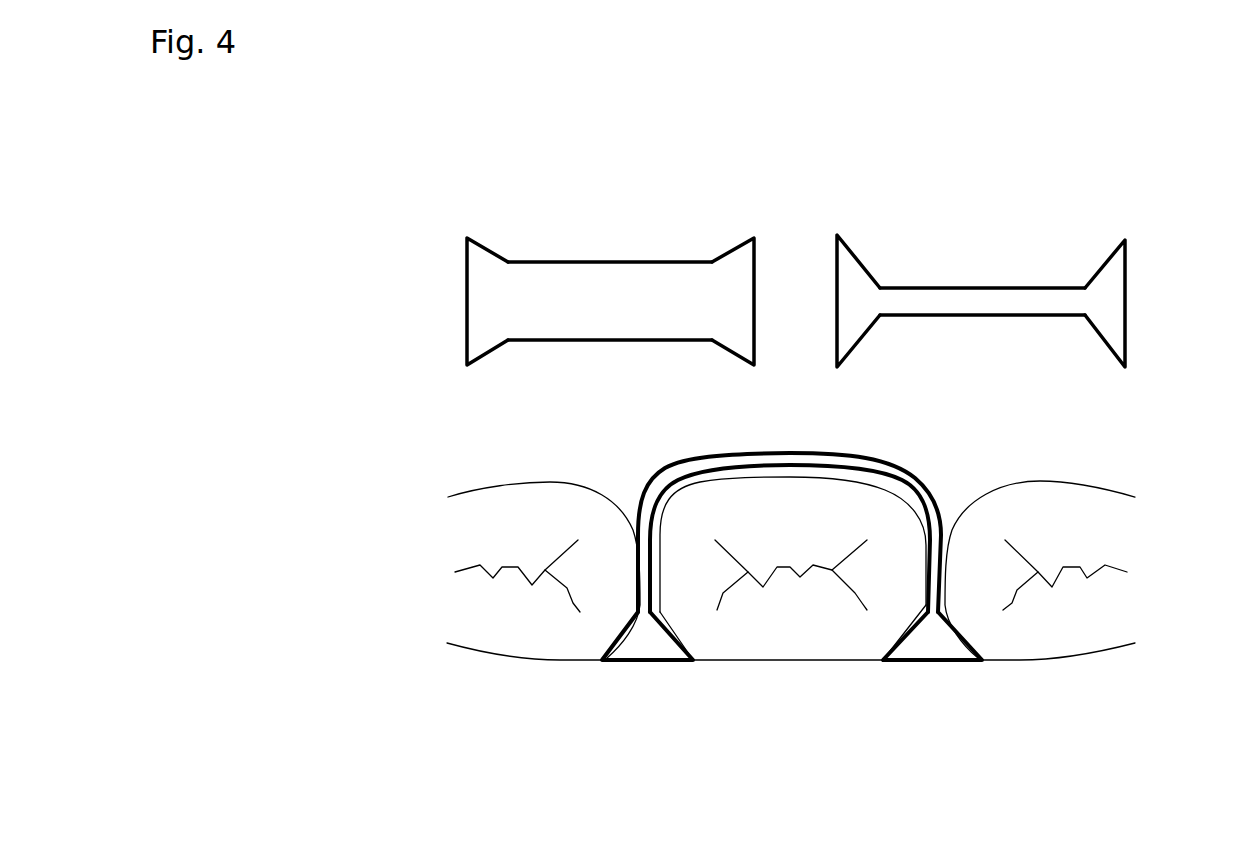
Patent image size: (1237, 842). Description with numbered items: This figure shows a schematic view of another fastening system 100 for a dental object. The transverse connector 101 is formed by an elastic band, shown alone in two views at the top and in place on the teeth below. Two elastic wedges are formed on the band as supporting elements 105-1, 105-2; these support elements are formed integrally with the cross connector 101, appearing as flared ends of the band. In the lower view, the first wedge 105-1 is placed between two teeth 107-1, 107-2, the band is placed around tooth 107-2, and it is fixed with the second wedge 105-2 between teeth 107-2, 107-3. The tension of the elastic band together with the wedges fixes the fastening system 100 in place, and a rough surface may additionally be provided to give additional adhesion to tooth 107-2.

The fastening system 100 is at (748, 166).
The transverse connector 101 is at (545, 293).
The supporting element 105-1 is at (483, 287).
The supporting element 105-2 is at (750, 275).
The tooth 107-1 is at (505, 605).
The tooth 107-2 is at (817, 605).
The tooth 107-3 is at (1080, 605).